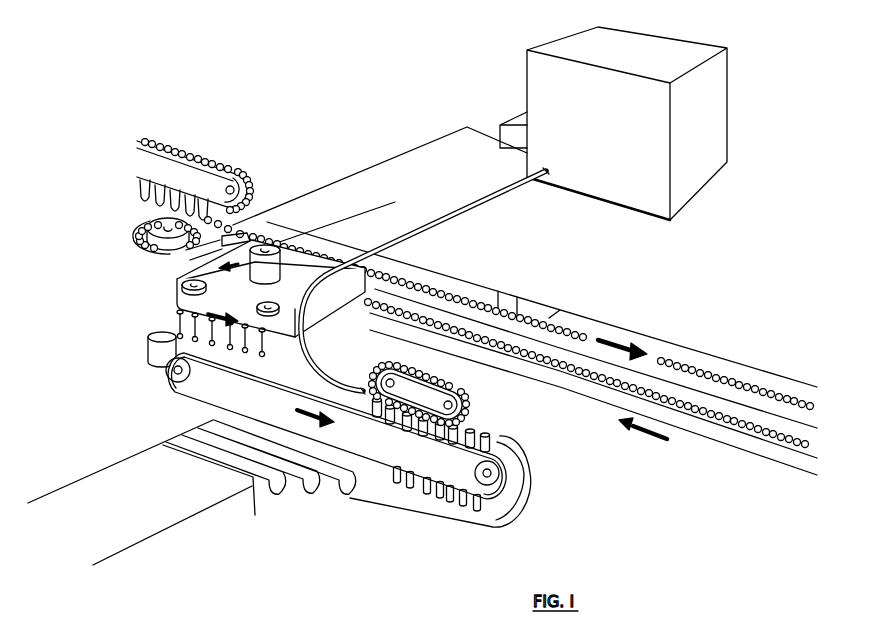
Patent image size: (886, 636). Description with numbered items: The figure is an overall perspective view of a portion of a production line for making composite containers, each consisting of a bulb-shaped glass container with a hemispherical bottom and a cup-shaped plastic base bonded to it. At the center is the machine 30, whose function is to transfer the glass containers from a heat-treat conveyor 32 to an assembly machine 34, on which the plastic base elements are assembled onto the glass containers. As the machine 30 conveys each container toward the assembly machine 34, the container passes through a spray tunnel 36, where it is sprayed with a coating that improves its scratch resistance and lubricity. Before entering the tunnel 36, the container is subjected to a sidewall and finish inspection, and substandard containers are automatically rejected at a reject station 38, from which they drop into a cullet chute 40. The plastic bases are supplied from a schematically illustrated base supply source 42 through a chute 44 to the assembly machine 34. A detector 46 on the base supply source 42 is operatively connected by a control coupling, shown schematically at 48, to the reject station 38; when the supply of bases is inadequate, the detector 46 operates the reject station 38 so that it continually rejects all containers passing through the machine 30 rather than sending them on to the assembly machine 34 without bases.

The machine 30 is at (305, 262).
The heat-treat conveyor 32 is at (527, 308).
The assembly machine 34 is at (188, 408).
The spray tunnel 36 is at (170, 275).
The reject station 38 is at (247, 243).
The cullet chute 40 is at (148, 346).
The base supply source 42 is at (718, 148).
The chute 44 is at (477, 203).
The detector 46 is at (513, 120).
The control coupling 48 is at (395, 157).